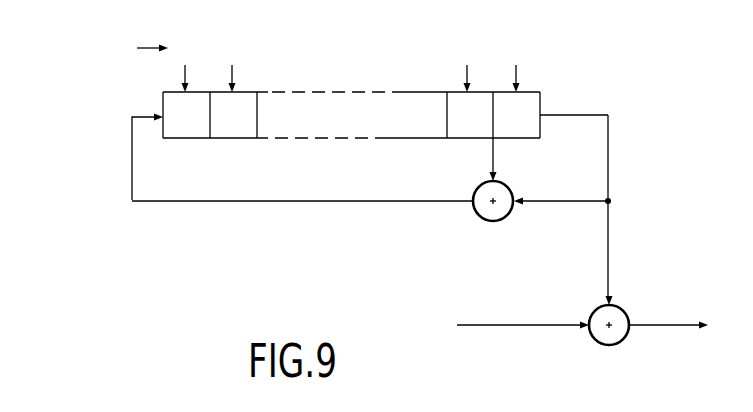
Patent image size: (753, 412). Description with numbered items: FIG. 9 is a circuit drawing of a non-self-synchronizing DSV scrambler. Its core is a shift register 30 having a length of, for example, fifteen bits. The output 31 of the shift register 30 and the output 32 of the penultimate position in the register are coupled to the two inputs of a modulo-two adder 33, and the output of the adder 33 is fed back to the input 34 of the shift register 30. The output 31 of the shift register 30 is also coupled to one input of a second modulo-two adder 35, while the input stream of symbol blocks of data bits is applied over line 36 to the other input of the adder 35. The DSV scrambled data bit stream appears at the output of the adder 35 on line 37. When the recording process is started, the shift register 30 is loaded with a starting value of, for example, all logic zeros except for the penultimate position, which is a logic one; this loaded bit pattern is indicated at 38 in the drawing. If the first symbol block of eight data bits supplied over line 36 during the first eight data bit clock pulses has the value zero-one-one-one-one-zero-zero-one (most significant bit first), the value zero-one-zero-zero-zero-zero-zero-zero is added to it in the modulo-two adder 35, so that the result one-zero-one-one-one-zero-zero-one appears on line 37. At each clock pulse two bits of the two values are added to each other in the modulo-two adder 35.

The shift register 30 is at (541, 97).
The output of the shift register 31 is at (543, 118).
The output of the penultimate position 32 is at (496, 143).
The modulo-2 adder 33 is at (497, 222).
The input of the shift register 34 is at (163, 112).
The modulo-2 adder 35 is at (607, 343).
The line 36 is at (500, 326).
The line 37 is at (680, 326).
The loaded bit pattern 38 is at (140, 49).